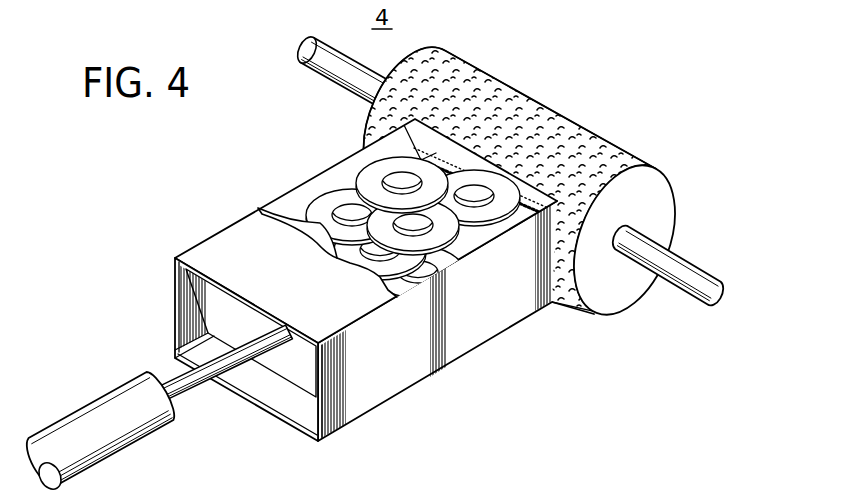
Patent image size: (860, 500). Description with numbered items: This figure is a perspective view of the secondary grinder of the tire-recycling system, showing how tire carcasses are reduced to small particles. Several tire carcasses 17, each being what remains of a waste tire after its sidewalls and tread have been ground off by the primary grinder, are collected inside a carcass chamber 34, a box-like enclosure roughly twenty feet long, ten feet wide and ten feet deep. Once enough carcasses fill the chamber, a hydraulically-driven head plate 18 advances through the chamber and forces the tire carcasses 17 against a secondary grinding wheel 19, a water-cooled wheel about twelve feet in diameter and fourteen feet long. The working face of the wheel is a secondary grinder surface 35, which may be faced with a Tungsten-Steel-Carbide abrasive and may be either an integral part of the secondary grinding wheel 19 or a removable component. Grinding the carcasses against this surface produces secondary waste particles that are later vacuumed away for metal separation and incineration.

The tire carcass 17 is at (370, 168).
The hydraulically-driven head plate 18 is at (305, 370).
The secondary grinding wheel 19 is at (661, 194).
The carcass chamber 34 is at (480, 323).
The secondary grinder surface 35 is at (544, 104).